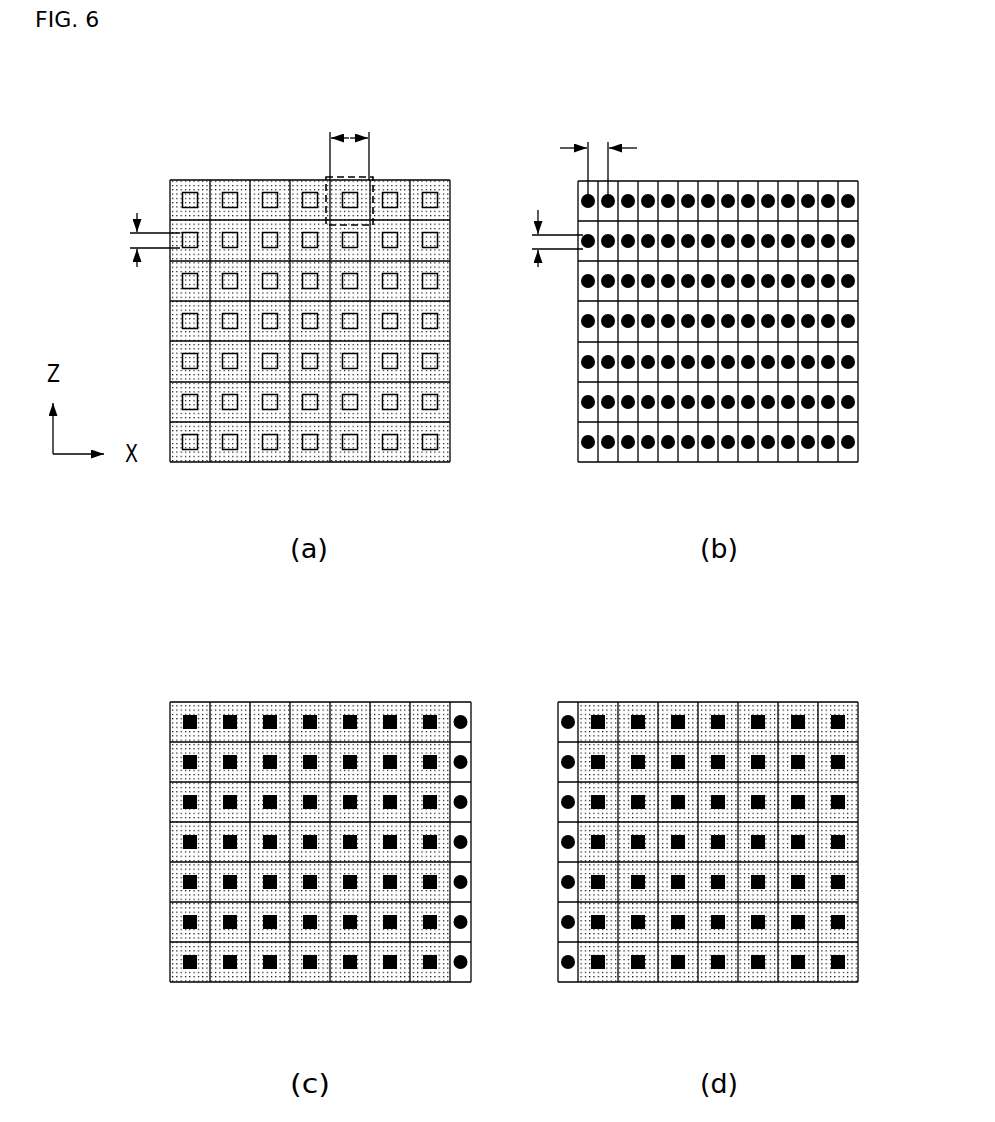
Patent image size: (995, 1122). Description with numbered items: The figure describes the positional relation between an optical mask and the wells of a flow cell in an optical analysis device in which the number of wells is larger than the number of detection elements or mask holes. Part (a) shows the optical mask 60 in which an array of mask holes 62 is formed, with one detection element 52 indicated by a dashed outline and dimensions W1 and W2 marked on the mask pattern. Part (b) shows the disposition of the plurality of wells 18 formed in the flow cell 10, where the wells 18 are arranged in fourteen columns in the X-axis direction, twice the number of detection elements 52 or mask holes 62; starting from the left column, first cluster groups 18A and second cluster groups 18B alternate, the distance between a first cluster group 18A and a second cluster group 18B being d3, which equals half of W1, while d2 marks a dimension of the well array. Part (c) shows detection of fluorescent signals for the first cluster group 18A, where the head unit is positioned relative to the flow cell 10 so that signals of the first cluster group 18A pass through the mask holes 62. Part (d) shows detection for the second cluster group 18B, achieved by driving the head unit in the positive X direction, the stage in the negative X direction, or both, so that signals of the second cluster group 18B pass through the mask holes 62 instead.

The flow cell 10 is at (784, 168).
The well 18 is at (680, 182).
The first cluster group 18A is at (587, 453).
The second cluster group 18B is at (610, 453).
The detection element 52 is at (375, 185).
The optical mask 60 is at (276, 168).
The mask hole 62 is at (227, 193).
The dimension w1 W1 is at (349, 142).
The pixel electrode width W2 is at (140, 240).
The light emitting element diameter d2 is at (542, 238).
The distance d3 is at (598, 155).